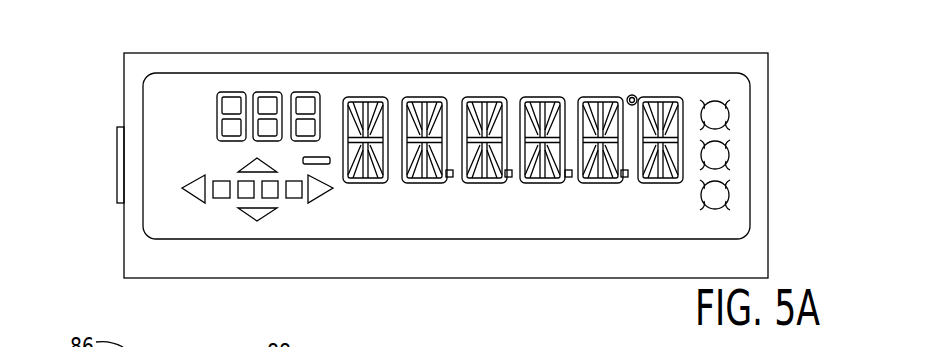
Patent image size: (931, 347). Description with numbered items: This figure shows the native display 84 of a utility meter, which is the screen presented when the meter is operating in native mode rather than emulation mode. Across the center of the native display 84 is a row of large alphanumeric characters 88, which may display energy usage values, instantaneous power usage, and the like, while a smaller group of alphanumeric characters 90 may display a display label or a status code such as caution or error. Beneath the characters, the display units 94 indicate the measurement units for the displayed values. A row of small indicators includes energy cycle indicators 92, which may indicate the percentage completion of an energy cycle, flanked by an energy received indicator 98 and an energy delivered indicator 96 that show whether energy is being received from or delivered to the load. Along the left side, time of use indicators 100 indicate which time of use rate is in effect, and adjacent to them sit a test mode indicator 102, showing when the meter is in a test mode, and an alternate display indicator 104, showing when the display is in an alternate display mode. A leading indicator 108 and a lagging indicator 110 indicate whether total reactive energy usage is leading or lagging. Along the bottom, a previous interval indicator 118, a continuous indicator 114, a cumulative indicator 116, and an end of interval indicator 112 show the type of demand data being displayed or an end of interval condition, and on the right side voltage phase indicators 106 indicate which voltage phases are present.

The native display 84 is at (143, 41).
The alphanumeric characters 88 is at (487, 97).
The alphanumeric characters 90 is at (272, 92).
The energy cycle indicators 92 is at (222, 199).
The display units 94 is at (458, 223).
The energy delivered indicators 96 is at (323, 202).
The energy received indicators 98 is at (195, 203).
The time of use (TOU) indicators 100 is at (160, 106).
The test mode indicator 102 is at (183, 88).
The alternate display indicator 104 is at (213, 90).
The voltage phase indicators 106 is at (729, 113).
The leading indicator 108 is at (246, 214).
The lagging indicator 110 is at (270, 163).
The end of interval (EOI) indicator 112 is at (665, 222).
The continuous indicator 114 is at (540, 223).
The cumulative indicator 116 is at (598, 223).
The previous interval indicator 118 is at (380, 223).